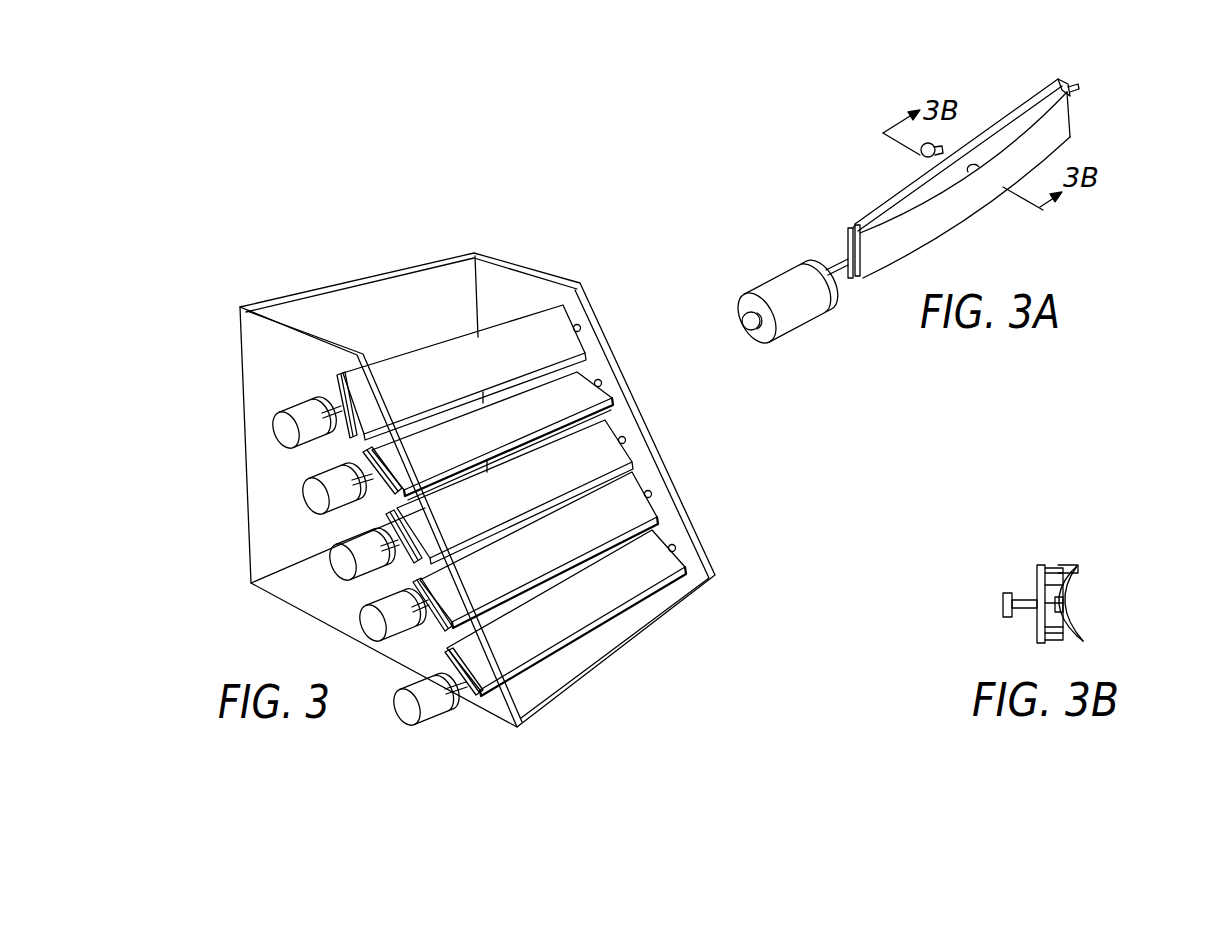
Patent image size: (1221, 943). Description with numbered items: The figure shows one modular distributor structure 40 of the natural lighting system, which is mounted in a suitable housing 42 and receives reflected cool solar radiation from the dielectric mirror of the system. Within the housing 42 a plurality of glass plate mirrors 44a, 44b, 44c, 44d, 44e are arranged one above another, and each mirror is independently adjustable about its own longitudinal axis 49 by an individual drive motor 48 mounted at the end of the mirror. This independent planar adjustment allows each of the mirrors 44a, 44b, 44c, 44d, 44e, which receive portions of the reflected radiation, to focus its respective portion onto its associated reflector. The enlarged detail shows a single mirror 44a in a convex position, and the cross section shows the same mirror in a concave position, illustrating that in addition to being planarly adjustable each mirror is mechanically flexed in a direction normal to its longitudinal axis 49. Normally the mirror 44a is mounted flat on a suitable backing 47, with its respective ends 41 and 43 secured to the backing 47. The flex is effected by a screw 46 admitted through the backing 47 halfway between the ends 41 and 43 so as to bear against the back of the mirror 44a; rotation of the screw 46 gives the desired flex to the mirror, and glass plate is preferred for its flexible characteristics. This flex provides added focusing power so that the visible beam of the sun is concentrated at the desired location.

In FIG. 3, the distributor structure 40 is at (220, 521).
In FIG. 3A, the end of mirror 41 is at (856, 224).
In FIG. 3, the housing 42 is at (376, 277).
In FIG. 3A, the end of mirror 43 is at (1041, 94).
In FIG. 3, the glass plate mirror 44a is at (463, 394).
In FIG. 3A, the glass plate mirror 44a is at (970, 236).
In FIG. 3B, the glass plate mirror 44a is at (1074, 617).
In FIG. 3, the glass plate mirror 44b is at (490, 451).
In FIG. 3, the glass plate mirror 44c is at (522, 511).
In FIG. 3, the glass plate mirror 44d is at (548, 571).
In FIG. 3, the glass plate mirror 44e is at (595, 621).
In FIG. 3A, the screw 46 is at (921, 152).
In FIG. 3B, the screw 46 is at (1002, 608).
In FIG. 3A, the backing 47 is at (993, 126).
In FIG. 3, the drive motor 48 is at (292, 441).
In FIG. 3A, the drive motor 48 is at (803, 301).
In FIG. 3, the longitudinal axis 49 is at (338, 403).
In FIG. 3A, the longitudinal axis 49 is at (836, 256).